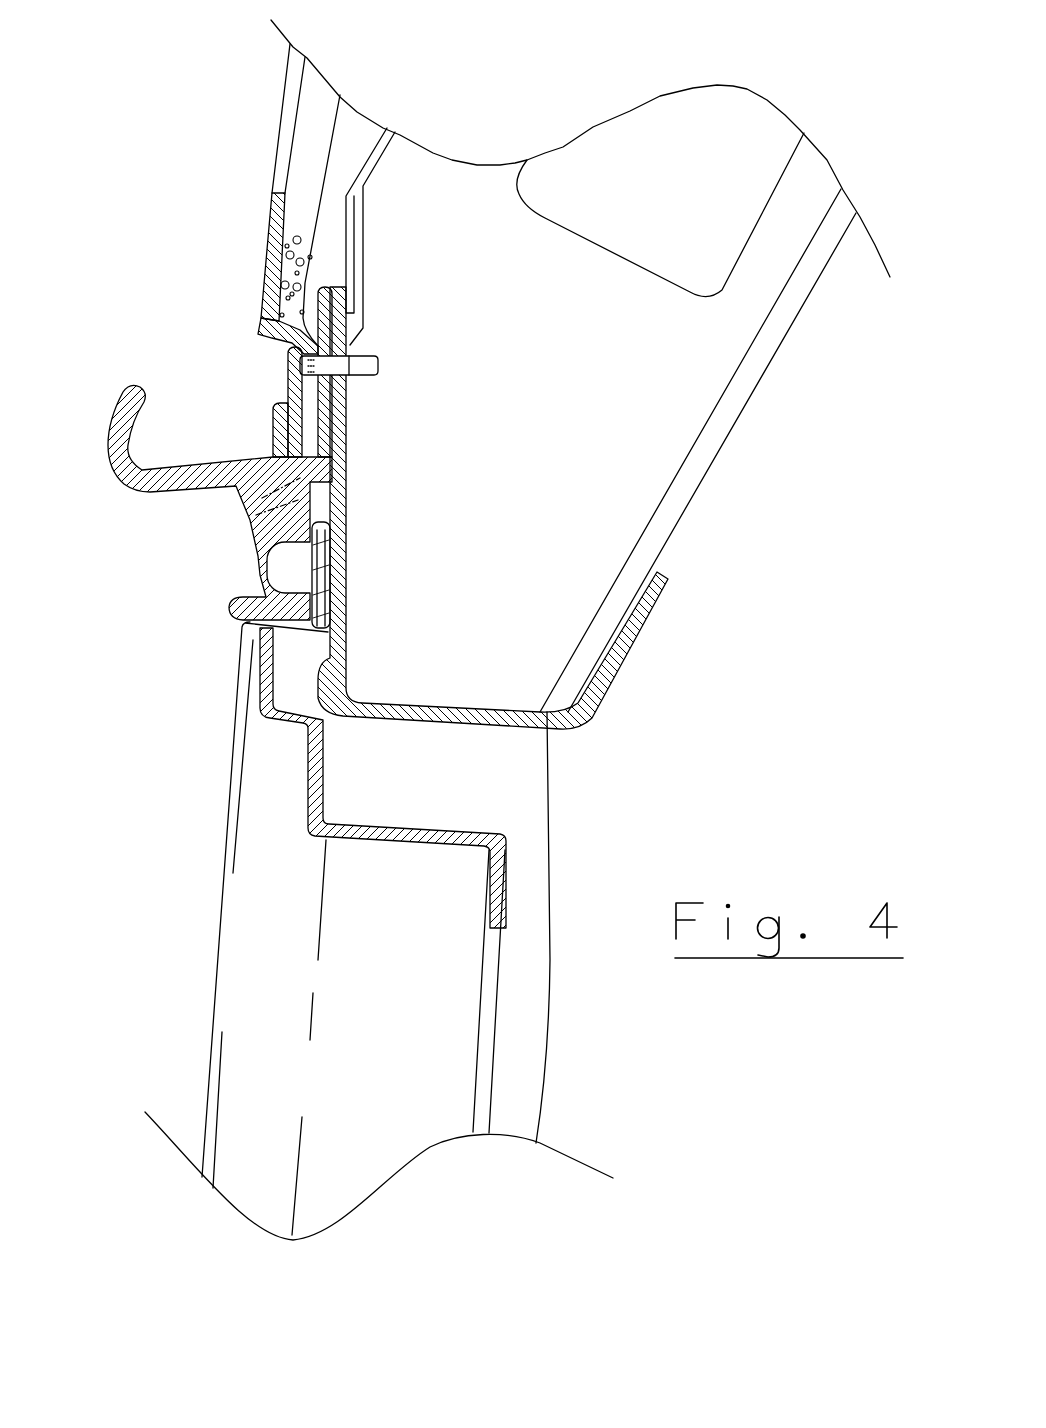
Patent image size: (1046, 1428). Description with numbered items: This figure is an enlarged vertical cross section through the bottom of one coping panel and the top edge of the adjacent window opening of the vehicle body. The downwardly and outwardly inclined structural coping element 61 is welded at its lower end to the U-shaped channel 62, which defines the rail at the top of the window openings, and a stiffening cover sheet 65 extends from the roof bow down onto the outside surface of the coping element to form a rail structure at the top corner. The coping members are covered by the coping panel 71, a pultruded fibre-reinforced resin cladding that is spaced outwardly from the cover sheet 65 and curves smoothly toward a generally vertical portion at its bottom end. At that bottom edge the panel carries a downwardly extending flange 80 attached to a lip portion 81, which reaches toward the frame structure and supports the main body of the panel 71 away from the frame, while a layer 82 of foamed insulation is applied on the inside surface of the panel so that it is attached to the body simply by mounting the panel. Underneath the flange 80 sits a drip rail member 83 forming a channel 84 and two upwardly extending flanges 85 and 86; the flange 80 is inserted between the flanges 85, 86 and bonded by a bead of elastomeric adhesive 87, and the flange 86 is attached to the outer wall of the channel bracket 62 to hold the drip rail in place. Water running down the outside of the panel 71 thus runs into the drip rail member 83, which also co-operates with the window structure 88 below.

The structural coping element 61 is at (672, 427).
The U-shaped channel 62 is at (652, 598).
The stiffening cover sheet 65 is at (370, 170).
The coping panel 71 is at (272, 194).
The flange 80 is at (293, 368).
The lip portion 81 is at (263, 332).
The layer of foamed insulation 82 is at (337, 108).
The drip rail member 83 is at (188, 440).
The channel 84 is at (120, 468).
The upwardly extending flange 85 is at (283, 437).
The upwardly extending flange 86 is at (327, 435).
The bead of elastomeric adhesive 87 is at (308, 378).
The window structure 88 is at (318, 559).